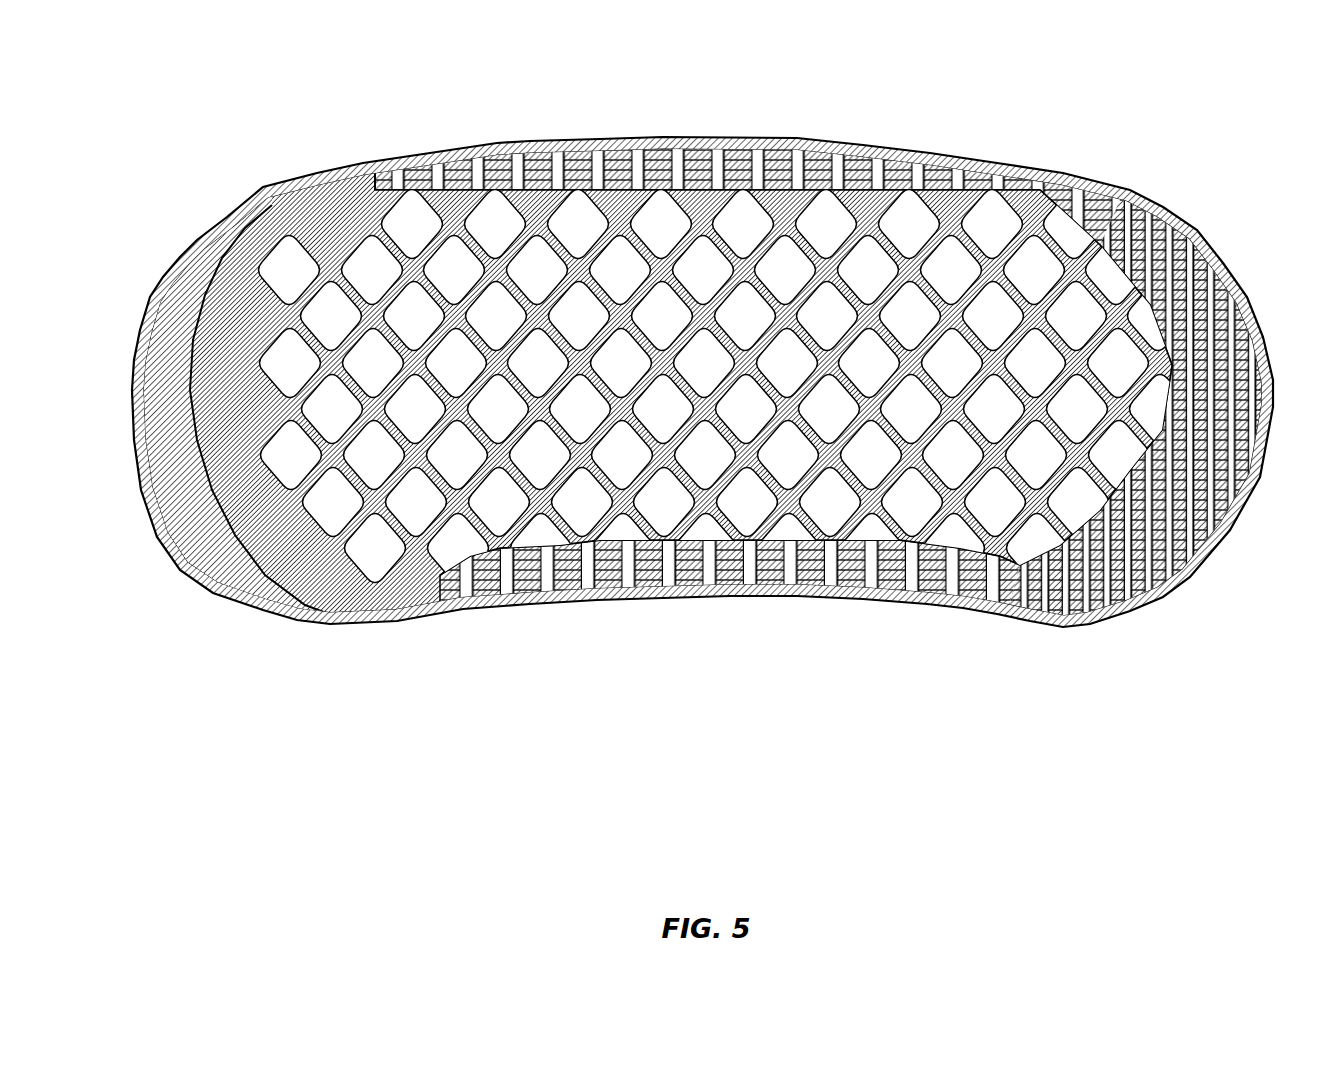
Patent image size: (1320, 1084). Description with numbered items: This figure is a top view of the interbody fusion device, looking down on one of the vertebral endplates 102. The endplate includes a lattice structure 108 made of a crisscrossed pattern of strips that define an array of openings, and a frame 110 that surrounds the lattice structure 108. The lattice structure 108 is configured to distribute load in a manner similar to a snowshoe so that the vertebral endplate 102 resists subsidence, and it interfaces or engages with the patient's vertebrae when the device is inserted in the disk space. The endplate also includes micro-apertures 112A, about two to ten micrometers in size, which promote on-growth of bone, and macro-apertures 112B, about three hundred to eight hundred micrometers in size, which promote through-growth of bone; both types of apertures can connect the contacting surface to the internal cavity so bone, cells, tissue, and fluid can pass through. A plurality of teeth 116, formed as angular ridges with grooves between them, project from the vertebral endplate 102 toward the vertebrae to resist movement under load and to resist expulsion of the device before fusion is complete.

The vertebral endplate 102 is at (267, 181).
The lattice structure 108 is at (652, 311).
The frame 110 is at (327, 201).
The micro-apertures 112A is at (1150, 351).
The macro-apertures 112B is at (1150, 210).
The teeth 116 is at (949, 156).